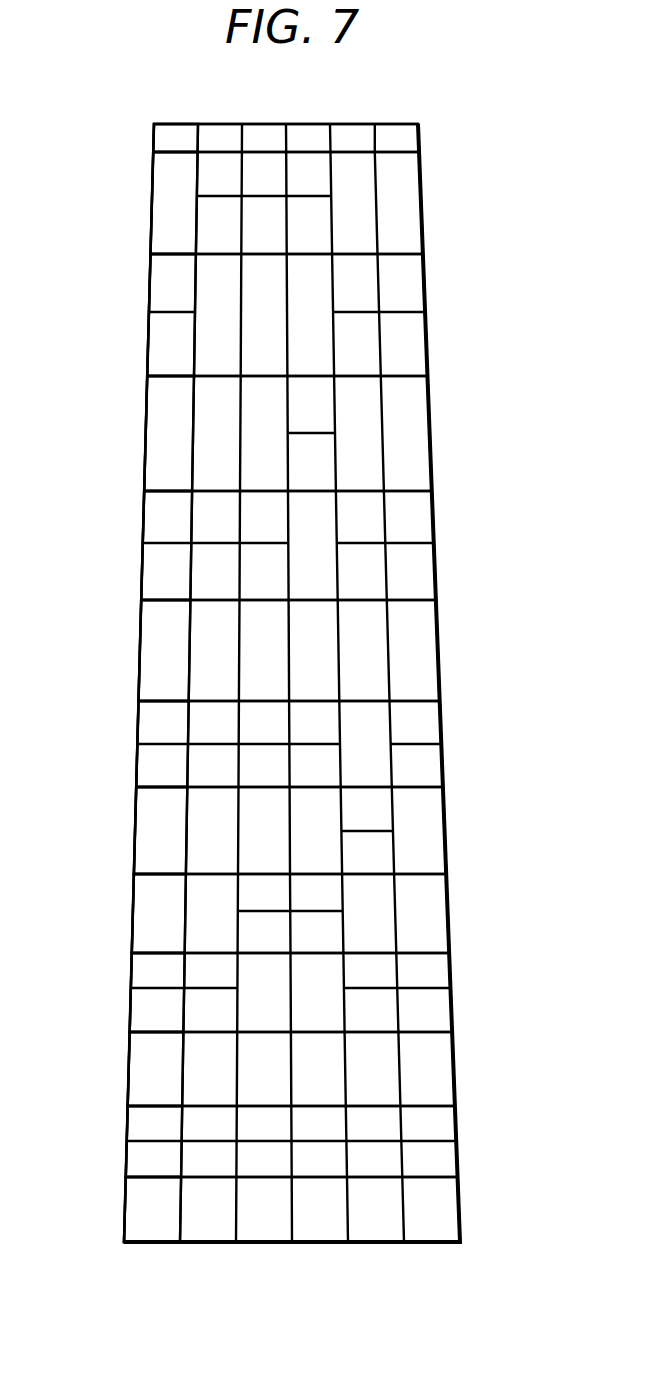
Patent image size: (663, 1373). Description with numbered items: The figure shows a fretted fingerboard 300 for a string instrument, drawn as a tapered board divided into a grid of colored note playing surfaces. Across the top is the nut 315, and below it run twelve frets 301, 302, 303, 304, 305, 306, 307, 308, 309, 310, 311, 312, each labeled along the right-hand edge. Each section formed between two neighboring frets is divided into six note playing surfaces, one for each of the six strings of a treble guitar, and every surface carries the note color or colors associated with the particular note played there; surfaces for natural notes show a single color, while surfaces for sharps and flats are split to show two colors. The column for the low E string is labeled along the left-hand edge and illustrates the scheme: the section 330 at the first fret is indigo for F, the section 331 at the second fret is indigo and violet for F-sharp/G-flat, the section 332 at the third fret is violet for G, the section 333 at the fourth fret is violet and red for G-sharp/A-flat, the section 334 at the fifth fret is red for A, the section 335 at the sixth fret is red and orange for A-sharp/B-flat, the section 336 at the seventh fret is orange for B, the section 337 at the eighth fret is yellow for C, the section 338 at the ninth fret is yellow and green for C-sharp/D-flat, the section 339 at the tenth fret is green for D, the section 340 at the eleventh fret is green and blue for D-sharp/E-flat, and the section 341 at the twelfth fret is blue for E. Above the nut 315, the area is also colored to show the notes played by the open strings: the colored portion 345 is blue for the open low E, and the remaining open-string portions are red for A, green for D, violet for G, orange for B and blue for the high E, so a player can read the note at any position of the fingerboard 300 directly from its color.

The fretted fingerboard 300 is at (268, 1246).
The nut 315 is at (419, 152).
The first fret 301 is at (423, 254).
The second fret 302 is at (428, 376).
The third fret 303 is at (432, 491).
The fourth fret 304 is at (436, 600).
The fifth fret 305 is at (440, 701).
The sixth fret 306 is at (443, 787).
The seventh fret 307 is at (446, 874).
The eighth fret 308 is at (449, 953).
The ninth fret 309 is at (452, 1032).
The tenth fret 310 is at (455, 1106).
The eleventh fret 311 is at (458, 1177).
The twelfth fret 312 is at (460, 1242).
The colored portion 345 is at (160, 137).
The note playing surface 330 is at (160, 187).
The note playing surface 331 is at (160, 338).
The note playing surface 332 is at (150, 406).
The note playing surface 333 is at (153, 572).
The note playing surface 334 is at (150, 645).
The note playing surface 335 is at (145, 765).
The note playing surface 336 is at (140, 817).
The note playing surface 337 is at (140, 910).
The note playing surface 338 is at (137, 1018).
The note playing surface 339 is at (138, 1070).
The note playing surface 340 is at (137, 1162).
The note playing surface 341 is at (130, 1207).